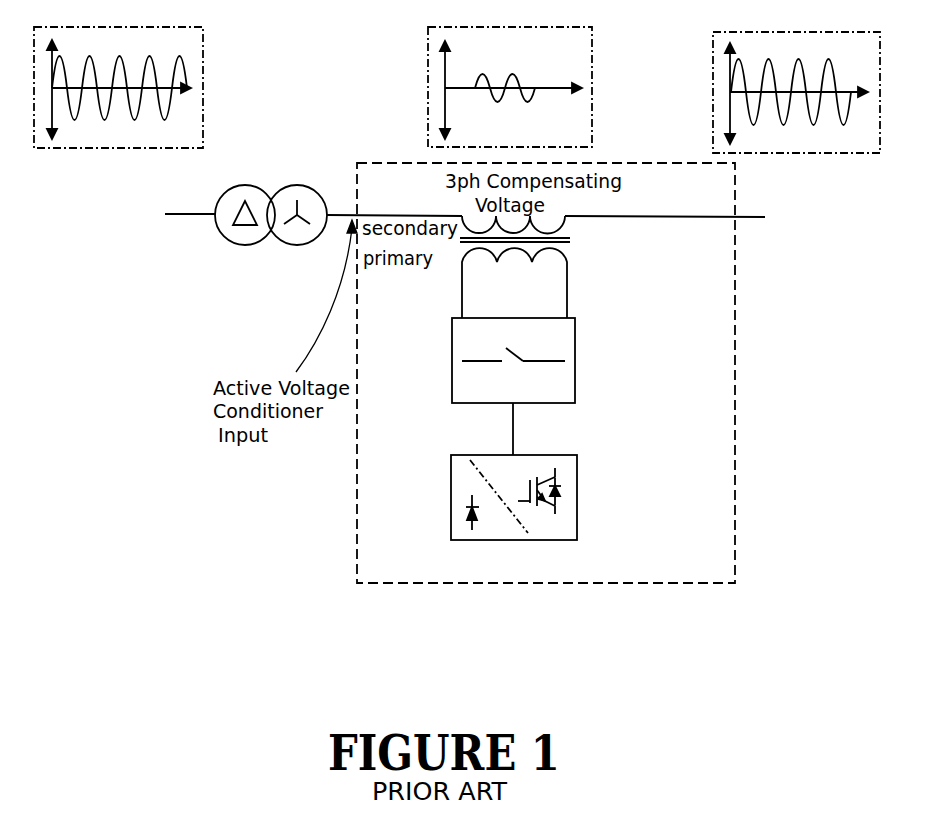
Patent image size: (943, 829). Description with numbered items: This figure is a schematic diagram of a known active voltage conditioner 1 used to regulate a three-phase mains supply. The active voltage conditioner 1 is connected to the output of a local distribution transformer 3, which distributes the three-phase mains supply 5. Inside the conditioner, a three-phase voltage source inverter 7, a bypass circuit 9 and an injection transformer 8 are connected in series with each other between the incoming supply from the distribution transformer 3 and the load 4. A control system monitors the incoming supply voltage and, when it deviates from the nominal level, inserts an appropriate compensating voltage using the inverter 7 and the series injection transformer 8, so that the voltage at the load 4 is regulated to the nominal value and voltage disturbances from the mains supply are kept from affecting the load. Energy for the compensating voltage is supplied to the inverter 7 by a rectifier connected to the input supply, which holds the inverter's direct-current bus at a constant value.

The active voltage conditioner 1 is at (404, 587).
The distribution transformer 3 is at (262, 183).
The load 4 is at (851, 236).
The three-phase mains supply 5 is at (111, 245).
The three-phase voltage source inverter 7 is at (559, 541).
The injection transformer 8 is at (577, 249).
The bypass circuit 9 is at (577, 389).